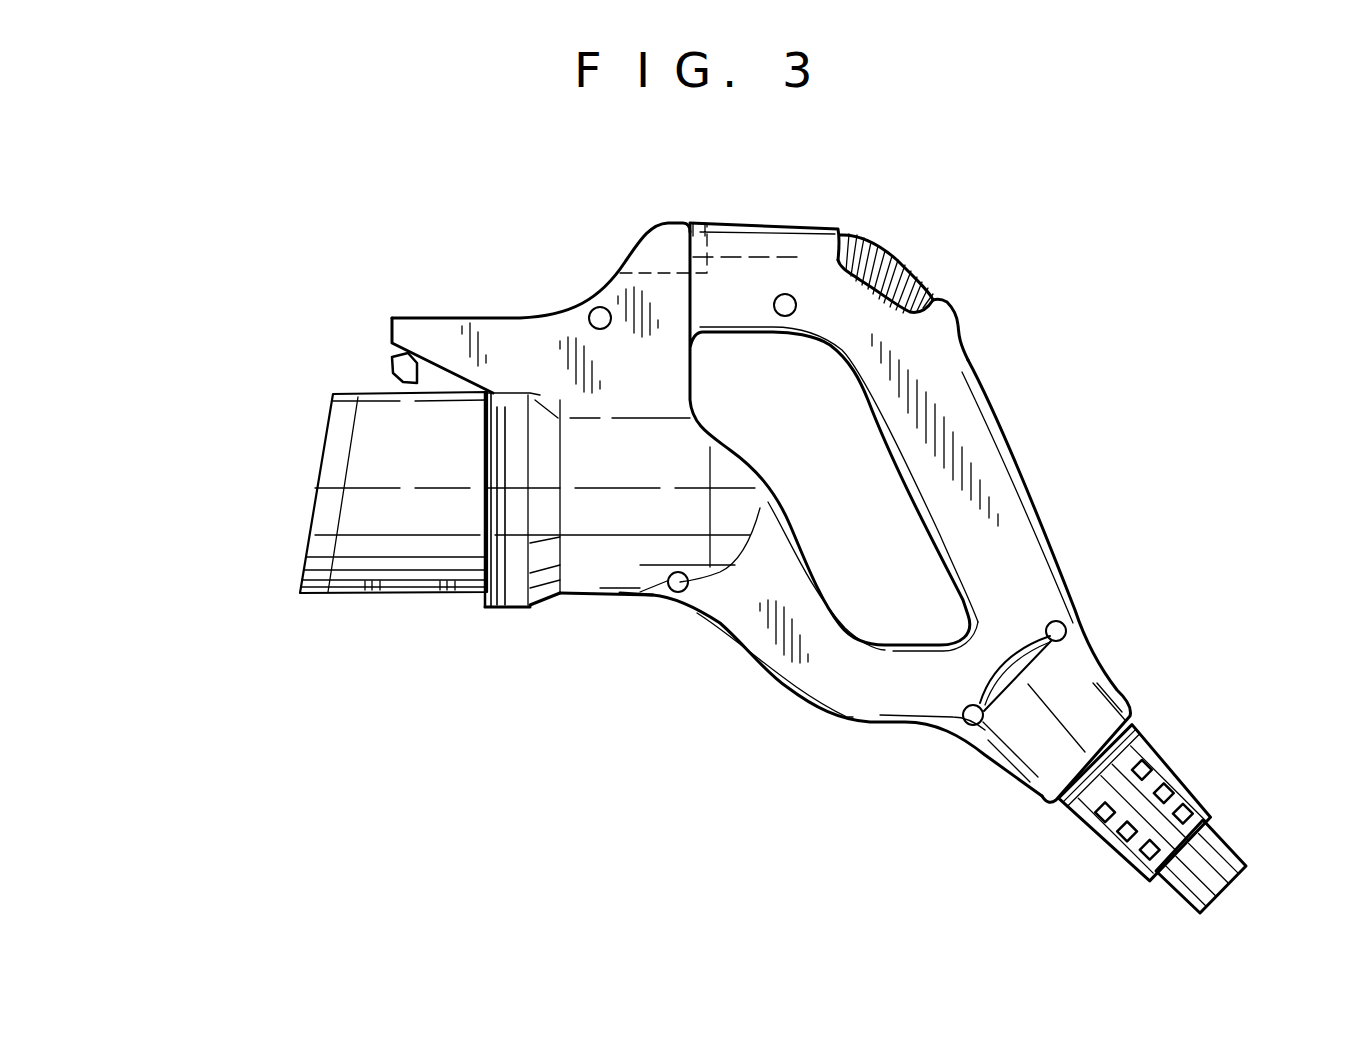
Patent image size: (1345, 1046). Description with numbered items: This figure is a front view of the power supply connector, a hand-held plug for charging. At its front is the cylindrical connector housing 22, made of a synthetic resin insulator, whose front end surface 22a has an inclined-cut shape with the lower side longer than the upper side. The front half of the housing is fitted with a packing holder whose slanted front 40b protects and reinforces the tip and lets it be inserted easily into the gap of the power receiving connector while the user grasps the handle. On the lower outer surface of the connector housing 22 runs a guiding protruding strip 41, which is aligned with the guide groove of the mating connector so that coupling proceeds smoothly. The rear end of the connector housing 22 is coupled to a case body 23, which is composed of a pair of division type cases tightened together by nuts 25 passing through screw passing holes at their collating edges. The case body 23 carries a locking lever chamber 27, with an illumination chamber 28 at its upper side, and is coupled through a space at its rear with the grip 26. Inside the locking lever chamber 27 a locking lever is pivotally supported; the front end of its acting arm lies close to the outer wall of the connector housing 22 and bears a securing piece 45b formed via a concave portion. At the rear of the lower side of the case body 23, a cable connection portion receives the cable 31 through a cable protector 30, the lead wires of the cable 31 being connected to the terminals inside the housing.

The connector housing 22 is at (427, 593).
The front end surface 22a is at (323, 553).
The case body 23 is at (752, 670).
The nuts 25 is at (785, 317).
The grip 26 is at (990, 455).
The locking lever chamber 27 is at (797, 222).
The illumination chamber 28 is at (645, 256).
The cable protector 30 is at (1180, 760).
The cable 31 is at (1230, 858).
The front of the packing holder 40b is at (313, 515).
The guiding protruding strip 41 is at (353, 593).
The securing piece 45b is at (390, 370).